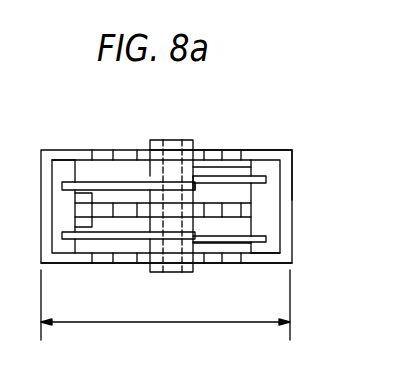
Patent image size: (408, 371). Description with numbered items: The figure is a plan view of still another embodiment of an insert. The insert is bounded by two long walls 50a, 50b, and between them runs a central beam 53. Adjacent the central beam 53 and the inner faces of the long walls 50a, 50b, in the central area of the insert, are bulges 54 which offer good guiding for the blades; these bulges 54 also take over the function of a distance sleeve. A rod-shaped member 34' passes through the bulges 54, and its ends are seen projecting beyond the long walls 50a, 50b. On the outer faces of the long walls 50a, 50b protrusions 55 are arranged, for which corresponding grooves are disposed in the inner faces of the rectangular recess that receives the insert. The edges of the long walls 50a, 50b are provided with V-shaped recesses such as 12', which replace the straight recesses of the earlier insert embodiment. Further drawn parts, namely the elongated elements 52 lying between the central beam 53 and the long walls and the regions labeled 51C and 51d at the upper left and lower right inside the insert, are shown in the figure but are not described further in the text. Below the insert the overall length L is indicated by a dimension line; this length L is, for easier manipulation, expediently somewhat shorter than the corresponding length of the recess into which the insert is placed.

The long wall 50a is at (270, 150).
The long wall 50b is at (86, 263).
The V-shaped recess 12' is at (114, 179).
The rod-shaped member 34' is at (179, 184).
The protrusion 55 is at (150, 268).
The central beam 53 is at (252, 208).
The plates 52 is at (62, 233).
The bulge 54 is at (151, 168).
The upper left gap 51C is at (60, 170).
The lower right gap 51d is at (276, 245).
The overall length L is at (138, 322).